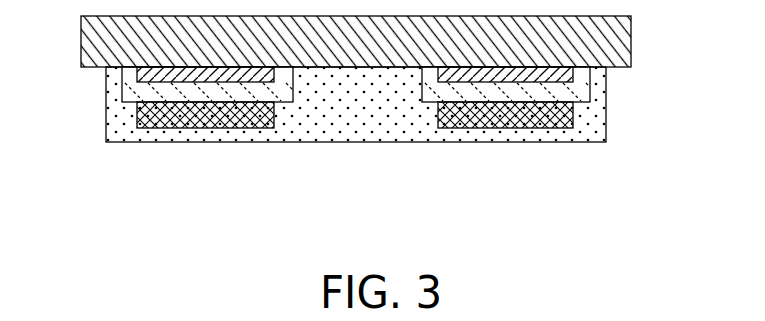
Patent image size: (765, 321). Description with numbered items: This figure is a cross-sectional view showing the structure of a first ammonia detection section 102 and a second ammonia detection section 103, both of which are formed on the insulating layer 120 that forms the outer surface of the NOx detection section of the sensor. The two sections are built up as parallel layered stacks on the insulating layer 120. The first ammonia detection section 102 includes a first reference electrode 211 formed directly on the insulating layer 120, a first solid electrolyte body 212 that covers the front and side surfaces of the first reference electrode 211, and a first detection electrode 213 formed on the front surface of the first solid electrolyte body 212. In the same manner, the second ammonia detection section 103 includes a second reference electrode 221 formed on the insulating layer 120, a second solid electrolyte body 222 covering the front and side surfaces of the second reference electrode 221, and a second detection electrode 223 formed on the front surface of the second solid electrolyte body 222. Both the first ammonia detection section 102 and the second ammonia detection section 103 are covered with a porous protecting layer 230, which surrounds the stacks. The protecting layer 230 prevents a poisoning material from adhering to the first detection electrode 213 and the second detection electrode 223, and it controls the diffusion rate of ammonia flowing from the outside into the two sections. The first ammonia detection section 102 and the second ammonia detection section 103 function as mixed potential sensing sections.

The insulating layer 120 is at (632, 42).
The protecting layer 230 is at (105, 95).
The first ammonia detection section 102 is at (215, 171).
The second ammonia detection section 103 is at (556, 171).
The first reference electrode 211 is at (274, 73).
The first solid electrolyte body 212 is at (124, 101).
The first detection electrode 213 is at (240, 129).
The second reference electrode 221 is at (568, 73).
The second solid electrolyte body 222 is at (582, 97).
The second detection electrode 223 is at (553, 130).